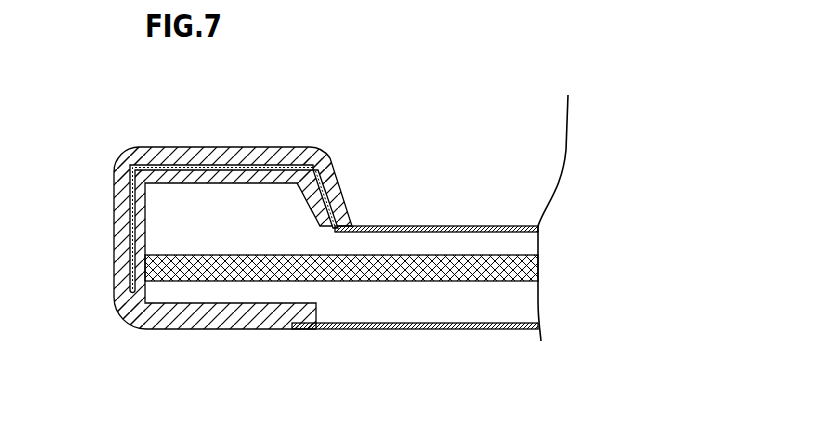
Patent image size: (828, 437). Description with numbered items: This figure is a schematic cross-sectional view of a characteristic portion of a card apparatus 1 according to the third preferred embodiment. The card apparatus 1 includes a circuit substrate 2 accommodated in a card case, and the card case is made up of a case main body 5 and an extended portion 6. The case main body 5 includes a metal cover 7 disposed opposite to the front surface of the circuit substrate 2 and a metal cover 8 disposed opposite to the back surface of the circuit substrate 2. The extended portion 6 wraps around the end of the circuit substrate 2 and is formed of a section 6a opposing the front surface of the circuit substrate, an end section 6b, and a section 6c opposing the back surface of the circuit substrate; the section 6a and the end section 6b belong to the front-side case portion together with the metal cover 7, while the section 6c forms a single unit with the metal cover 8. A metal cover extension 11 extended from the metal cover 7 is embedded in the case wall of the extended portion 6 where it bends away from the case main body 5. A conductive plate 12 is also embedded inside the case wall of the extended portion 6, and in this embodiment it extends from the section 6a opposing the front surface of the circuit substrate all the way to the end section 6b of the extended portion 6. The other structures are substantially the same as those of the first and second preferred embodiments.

The card apparatus 1 is at (598, 136).
The circuit substrate 2 is at (369, 268).
The case main body 5 is at (356, 220).
The extended portion 6 is at (230, 221).
The section opposing the front surface of the circuit substrate 6a is at (205, 151).
The end section of the extended portion 6b is at (126, 231).
The section opposing the back surface of the circuit substrate 6c is at (247, 316).
The metal cover 7 is at (440, 226).
The metal cover 8 is at (396, 330).
The metal cover extension 11 is at (322, 190).
The conductive plate 12 is at (205, 170).